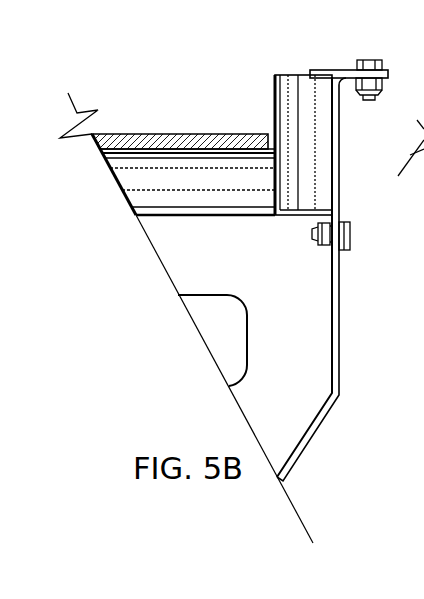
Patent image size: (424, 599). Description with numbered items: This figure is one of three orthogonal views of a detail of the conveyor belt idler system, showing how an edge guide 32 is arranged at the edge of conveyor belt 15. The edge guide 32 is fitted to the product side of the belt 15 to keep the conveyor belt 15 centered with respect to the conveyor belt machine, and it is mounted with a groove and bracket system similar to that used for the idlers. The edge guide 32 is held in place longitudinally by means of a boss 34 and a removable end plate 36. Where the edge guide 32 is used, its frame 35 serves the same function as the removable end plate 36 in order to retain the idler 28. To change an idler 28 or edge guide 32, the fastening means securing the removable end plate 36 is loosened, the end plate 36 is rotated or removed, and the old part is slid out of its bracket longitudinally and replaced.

The conveyor belt 15 is at (177, 117).
The idler 28 is at (146, 181).
The edge guide 32 is at (260, 134).
The boss 34 is at (205, 265).
The frame 35 is at (346, 279).
The removable end plate 36 is at (315, 62).